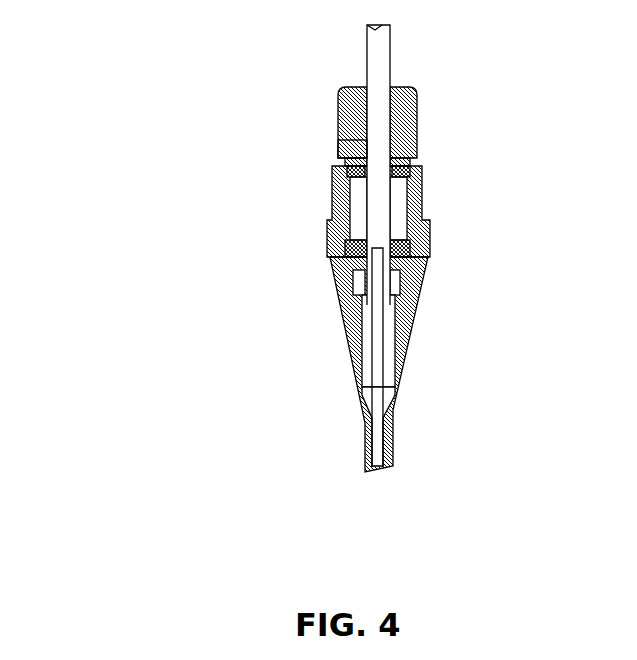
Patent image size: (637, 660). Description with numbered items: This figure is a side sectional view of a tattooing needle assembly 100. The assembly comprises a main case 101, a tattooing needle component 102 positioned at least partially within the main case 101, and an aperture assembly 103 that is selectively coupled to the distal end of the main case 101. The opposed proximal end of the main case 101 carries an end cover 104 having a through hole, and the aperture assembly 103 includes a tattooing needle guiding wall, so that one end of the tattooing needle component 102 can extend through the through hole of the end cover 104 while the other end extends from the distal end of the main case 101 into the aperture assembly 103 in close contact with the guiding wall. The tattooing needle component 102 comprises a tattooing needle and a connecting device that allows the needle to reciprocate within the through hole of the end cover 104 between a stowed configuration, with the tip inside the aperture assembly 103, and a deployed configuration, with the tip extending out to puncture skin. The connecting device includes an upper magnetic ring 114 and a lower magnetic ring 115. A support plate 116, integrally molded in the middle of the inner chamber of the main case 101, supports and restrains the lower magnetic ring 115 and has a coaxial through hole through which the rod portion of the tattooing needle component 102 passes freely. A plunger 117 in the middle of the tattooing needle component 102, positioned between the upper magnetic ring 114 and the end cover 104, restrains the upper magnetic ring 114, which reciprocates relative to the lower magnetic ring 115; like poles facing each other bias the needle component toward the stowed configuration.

The tattooing needle assembly 100 is at (146, 226).
The main case 101 is at (422, 205).
The tattooing needle component 102 is at (375, 222).
The aperture assembly 103 is at (352, 387).
The end cover 104 is at (417, 105).
The upper magnetic ring 114 is at (335, 155).
The lower magnetic ring 115 is at (398, 250).
The support plate 116 is at (345, 252).
The plunger 117 is at (392, 160).